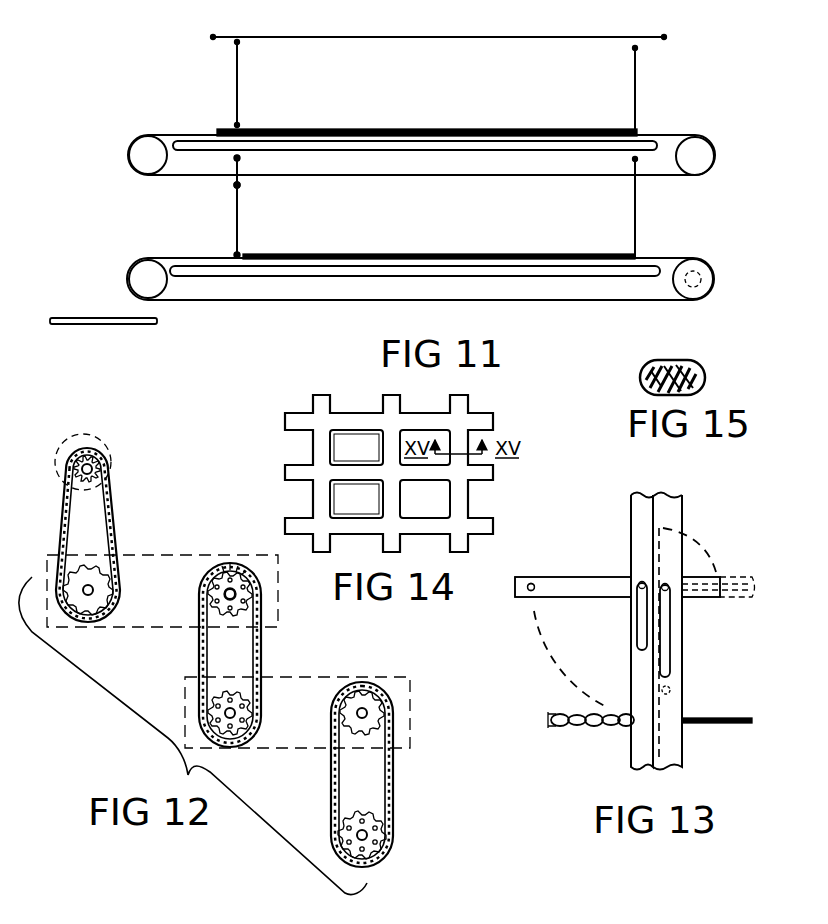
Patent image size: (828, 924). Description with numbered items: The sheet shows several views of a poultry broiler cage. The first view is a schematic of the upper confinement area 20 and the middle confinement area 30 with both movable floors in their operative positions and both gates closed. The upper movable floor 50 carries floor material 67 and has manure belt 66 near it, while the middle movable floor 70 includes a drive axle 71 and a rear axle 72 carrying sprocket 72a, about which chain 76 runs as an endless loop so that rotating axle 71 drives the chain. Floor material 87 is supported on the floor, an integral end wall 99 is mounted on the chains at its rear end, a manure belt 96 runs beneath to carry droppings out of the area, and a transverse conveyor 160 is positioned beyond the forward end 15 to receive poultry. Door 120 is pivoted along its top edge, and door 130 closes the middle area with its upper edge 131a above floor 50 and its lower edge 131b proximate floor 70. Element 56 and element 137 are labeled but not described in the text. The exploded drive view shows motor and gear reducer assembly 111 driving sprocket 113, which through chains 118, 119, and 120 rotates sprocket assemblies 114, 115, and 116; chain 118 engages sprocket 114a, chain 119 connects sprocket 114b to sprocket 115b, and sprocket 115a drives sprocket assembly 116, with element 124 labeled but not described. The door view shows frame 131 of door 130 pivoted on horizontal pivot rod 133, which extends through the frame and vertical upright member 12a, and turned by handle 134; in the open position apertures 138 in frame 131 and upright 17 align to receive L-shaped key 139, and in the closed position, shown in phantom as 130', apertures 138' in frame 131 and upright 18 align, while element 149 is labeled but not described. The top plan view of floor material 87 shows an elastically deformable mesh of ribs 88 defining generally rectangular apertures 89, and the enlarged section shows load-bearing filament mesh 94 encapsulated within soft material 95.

In FIG. 11, the forward end 15 is at (182, 70).
In FIG. 11, the upper confinement area 20 is at (456, 89).
In FIG. 11, the middle confinement area 30 is at (488, 249).
In FIG. 11, the upper movable floor 50 is at (284, 127).
In FIG. 11, the upper conveyor roller 56 is at (658, 134).
In FIG. 11, the manure belt 66 is at (582, 150).
In FIG. 11, the floor material 67 is at (515, 131).
In FIG. 11, the middle movable floor 70 is at (291, 251).
In FIG. 13, the middle movable floor 70 is at (708, 726).
In FIG. 11, the drive axle 71 is at (130, 288).
In FIG. 11, the rear axle 72 is at (704, 282).
In FIG. 11, the rear sprocket 72a is at (703, 265).
In FIG. 11, the chain 76 is at (588, 301).
In FIG. 13, the chain 76 is at (574, 727).
In FIG. 11, the floor material 87 is at (388, 257).
In FIG. 13, the floor material 87 is at (736, 718).
In FIG. 14, the floor material 87 is at (488, 404).
In FIG. 14, the ribs 88 is at (313, 444).
In FIG. 14, the apertures 89 is at (364, 458).
In FIG. 15, the load-bearing filament mesh 94 is at (682, 372).
In FIG. 15, the soft encapsulating material 95 is at (703, 381).
In FIG. 11, the manure belt 96 is at (298, 277).
In FIG. 11, the end wall 99 is at (636, 216).
In FIG. 11, the access door 120 is at (237, 88).
In FIG. 12, the access door 120 is at (393, 783).
In FIG. 11, the access door 130 is at (194, 207).
In FIG. 13, the access door 130 is at (573, 556).
In FIG. 13, the link pivoted position 130' is at (662, 618).
In FIG. 13, the frame 131 is at (572, 591).
In FIG. 11, the upper edge 131a is at (238, 158).
In FIG. 13, the upper edge 131a is at (722, 585).
In FIG. 11, the lower edge 131b is at (235, 255).
In FIG. 13, the lower edge 131b is at (515, 590).
In FIG. 11, the pivot rod 133 is at (235, 186).
In FIG. 13, the pivot rod 133 is at (668, 591).
In FIG. 13, the handle 134 is at (665, 644).
In FIG. 11, the pivot 137 is at (244, 182).
In FIG. 13, the apertures 138 is at (611, 566).
In FIG. 13, the apertures 138' is at (628, 621).
In FIG. 13, the L-shaped key 139 is at (683, 757).
In FIG. 13, the slot 149 is at (636, 626).
In FIG. 11, the transverse conveyor 160 is at (55, 318).
In FIG. 13, the vertical upright member 12a is at (657, 492).
In FIG. 13, the upright 17 is at (640, 517).
In FIG. 13, the upright 18 is at (672, 507).
In FIG. 12, the motor and gear reducer assembly 111 is at (100, 449).
In FIG. 12, the drive sprocket 113 is at (95, 469).
In FIG. 12, the sprocket assembly 114 is at (195, 555).
In FIG. 12, the sprocket 114a is at (104, 586).
In FIG. 12, the sprocket 114b is at (252, 600).
In FIG. 12, the sprocket assembly 115 is at (340, 676).
In FIG. 12, the sprocket 115a is at (380, 713).
In FIG. 12, the sprocket 115b is at (252, 712).
In FIG. 12, the sprocket assembly 116 is at (380, 829).
In FIG. 12, the chain 118 is at (117, 521).
In FIG. 12, the chain 119 is at (262, 651).
In FIG. 12, the sprocket pin 124 is at (244, 568).